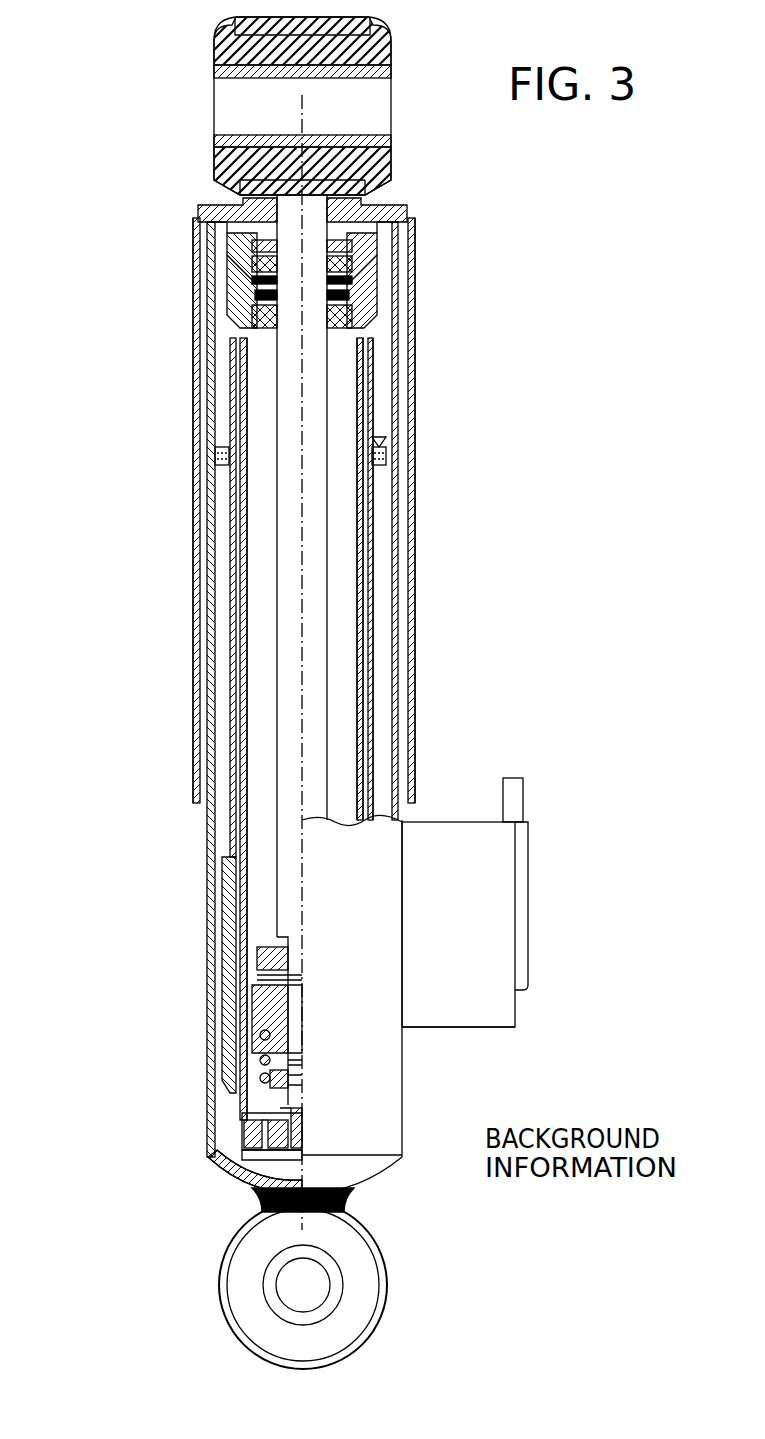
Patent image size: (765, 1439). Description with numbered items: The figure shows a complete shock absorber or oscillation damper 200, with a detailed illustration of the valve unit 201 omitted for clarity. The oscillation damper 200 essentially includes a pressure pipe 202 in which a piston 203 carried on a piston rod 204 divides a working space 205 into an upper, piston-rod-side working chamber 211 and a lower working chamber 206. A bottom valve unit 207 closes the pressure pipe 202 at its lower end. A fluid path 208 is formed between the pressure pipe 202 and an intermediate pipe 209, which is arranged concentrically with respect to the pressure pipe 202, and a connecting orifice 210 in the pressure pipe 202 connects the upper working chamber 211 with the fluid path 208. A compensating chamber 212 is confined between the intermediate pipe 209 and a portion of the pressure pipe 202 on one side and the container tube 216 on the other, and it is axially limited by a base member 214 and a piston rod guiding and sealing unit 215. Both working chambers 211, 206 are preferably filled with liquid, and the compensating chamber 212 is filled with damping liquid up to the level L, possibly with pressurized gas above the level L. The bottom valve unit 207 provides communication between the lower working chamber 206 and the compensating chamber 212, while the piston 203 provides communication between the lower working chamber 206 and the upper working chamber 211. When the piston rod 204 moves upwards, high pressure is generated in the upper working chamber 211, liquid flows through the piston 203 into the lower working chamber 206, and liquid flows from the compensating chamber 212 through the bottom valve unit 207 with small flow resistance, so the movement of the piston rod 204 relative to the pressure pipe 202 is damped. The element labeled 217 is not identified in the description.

The oscillation damper 200 is at (163, 680).
The valve unit 201 is at (465, 811).
The pressure pipe 202 is at (370, 620).
The piston 203 is at (247, 1028).
The piston rod 204 is at (318, 507).
The working space 205 is at (258, 480).
The lower working chamber 206 is at (253, 1102).
The bottom valve unit 207 is at (247, 1140).
The fluid path 208 is at (377, 657).
The intermediate pipe 209 is at (370, 703).
The connecting orifice 210 is at (355, 423).
The upper working chamber 211 is at (258, 585).
The compensating chamber 212 is at (380, 583).
The base member 214 is at (217, 1160).
The piston rod guiding and sealing unit 215 is at (380, 317).
The container tube 216 is at (398, 545).
The housing bottom 217 is at (455, 1027).
The level L is at (225, 447).